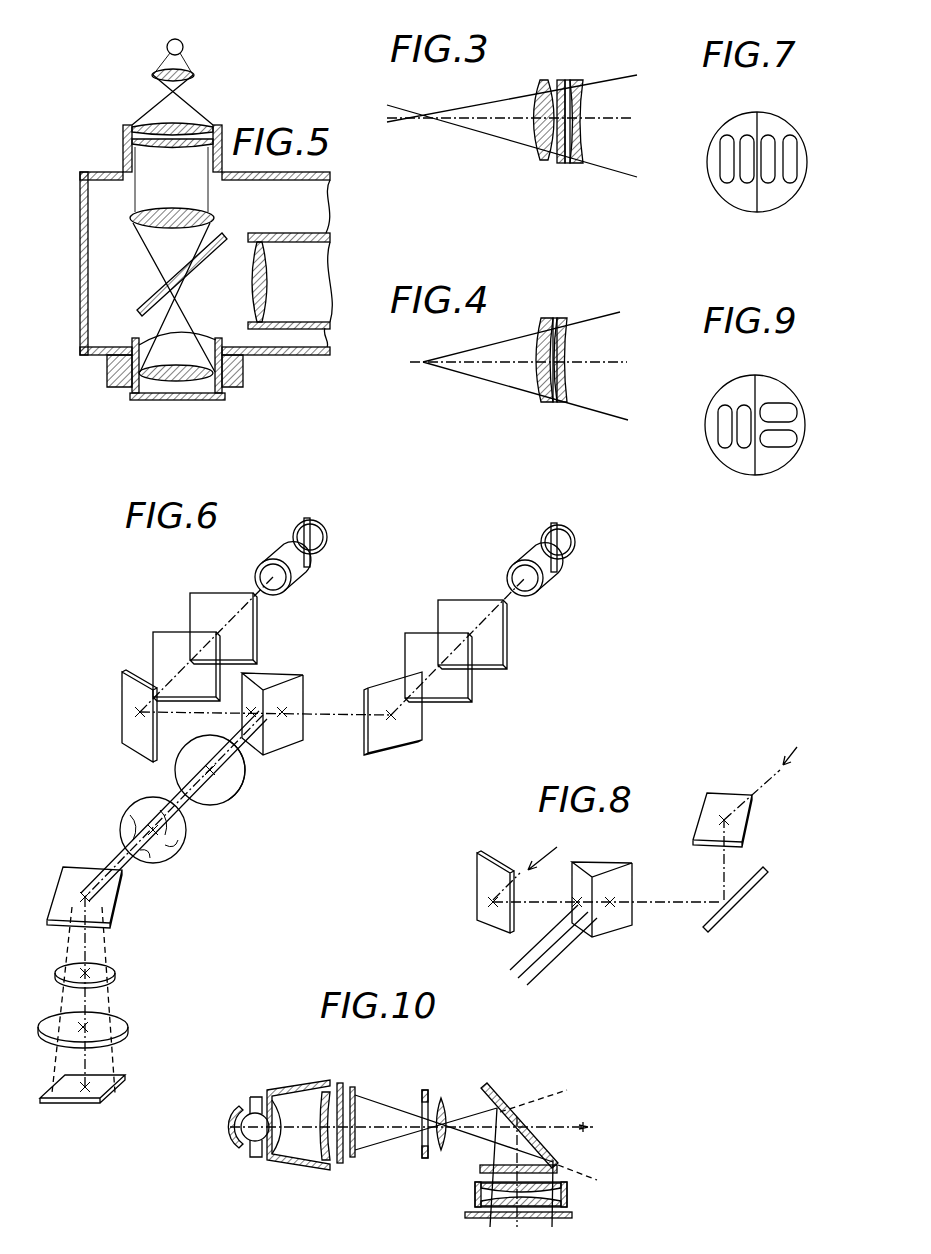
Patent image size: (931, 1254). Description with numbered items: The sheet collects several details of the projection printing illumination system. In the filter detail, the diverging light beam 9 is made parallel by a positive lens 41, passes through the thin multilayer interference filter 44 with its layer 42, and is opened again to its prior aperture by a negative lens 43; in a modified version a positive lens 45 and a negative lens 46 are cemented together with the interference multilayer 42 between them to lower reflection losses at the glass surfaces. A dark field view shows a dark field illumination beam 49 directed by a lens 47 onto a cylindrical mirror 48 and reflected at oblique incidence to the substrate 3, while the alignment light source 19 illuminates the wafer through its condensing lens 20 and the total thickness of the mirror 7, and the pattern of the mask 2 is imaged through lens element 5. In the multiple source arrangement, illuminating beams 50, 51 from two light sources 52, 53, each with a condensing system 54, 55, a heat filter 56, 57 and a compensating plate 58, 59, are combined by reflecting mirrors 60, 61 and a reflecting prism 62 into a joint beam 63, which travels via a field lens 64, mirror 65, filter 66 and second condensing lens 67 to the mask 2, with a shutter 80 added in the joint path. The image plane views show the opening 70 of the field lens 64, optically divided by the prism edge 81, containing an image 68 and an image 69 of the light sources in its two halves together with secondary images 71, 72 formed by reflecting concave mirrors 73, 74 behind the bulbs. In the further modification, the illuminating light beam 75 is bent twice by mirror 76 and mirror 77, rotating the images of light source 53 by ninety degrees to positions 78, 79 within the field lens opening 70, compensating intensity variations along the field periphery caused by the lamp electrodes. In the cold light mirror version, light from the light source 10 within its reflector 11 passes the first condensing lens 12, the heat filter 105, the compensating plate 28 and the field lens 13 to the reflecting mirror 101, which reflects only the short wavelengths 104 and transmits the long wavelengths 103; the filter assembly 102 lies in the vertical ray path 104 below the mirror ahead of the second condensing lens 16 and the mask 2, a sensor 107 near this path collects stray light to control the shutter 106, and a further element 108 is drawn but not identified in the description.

In FIG. 6, the mask 2 is at (50, 1093).
In FIG. 10, the mask 2 is at (465, 1216).
In FIG. 5, the substrate 3 is at (130, 397).
In FIG. 5, the lens element 5 is at (285, 329).
In FIG. 5, the mirror 7 is at (137, 306).
In FIG. 3, the light beam 9 is at (627, 173).
In FIG. 4, the light beam 9 is at (604, 410).
In FIG. 10, the light beam 9 is at (383, 1151).
In FIG. 10, the light source 10 is at (255, 1097).
In FIG. 10, the reflector 11 is at (233, 1102).
In FIG. 10, the first condensing lens 12 is at (300, 1085).
In FIG. 10, the field lens 13 is at (441, 1098).
In FIG. 10, the second condensing lens 16 is at (568, 1205).
In FIG. 5, the light source 19 is at (183, 46).
In FIG. 5, the condensing lens 20 is at (152, 78).
In FIG. 10, the compensating plate 28 is at (357, 1090).
In FIG. 3, the positive lens 41 is at (540, 161).
In FIG. 3, the interference multilayer 42 is at (568, 81).
In FIG. 4, the interference multilayer 42 is at (555, 318).
In FIG. 3, the negative lens 43 is at (577, 165).
In FIG. 3, the thin multilayer interference filter 44 is at (560, 81).
In FIG. 4, the positive lens 45 is at (541, 404).
In FIG. 4, the negative lens 46 is at (561, 404).
In FIG. 5, the lens 47 is at (132, 217).
In FIG. 5, the cylindrical mirror 48 is at (214, 365).
In FIG. 5, the dark field illumination beam 49 is at (147, 255).
In FIG. 6, the illuminating beam 50 is at (254, 584).
In FIG. 8, the illuminating beam 50 is at (545, 846).
In FIG. 6, the illuminating beam 51 is at (510, 600).
In FIG. 6, the light source 52 is at (304, 520).
In FIG. 6, the light source 53 is at (551, 530).
In FIG. 6, the condensing system 54 is at (280, 552).
In FIG. 6, the condensing system 55 is at (520, 556).
In FIG. 6, the heat filter 56 is at (186, 595).
In FIG. 6, the heat filter 57 is at (504, 663).
In FIG. 6, the compensating plate 58 is at (153, 633).
In FIG. 6, the compensating plate 59 is at (470, 700).
In FIG. 6, the reflecting mirror 60 is at (122, 672).
In FIG. 8, the reflecting mirror 60 is at (487, 931).
In FIG. 6, the reflecting mirror 61 is at (424, 742).
In FIG. 6, the reflecting prism 62 is at (300, 746).
In FIG. 8, the reflecting prism 62 is at (622, 935).
In FIG. 6, the joint beam 63 is at (115, 860).
In FIG. 8, the joint beam 63 is at (548, 958).
In FIG. 6, the field lens 64 is at (248, 797).
In FIG. 6, the mirror 65 is at (68, 866).
In FIG. 6, the filter 66 is at (65, 967).
In FIG. 6, the second condensing lens 67 is at (48, 1018).
In FIG. 7, the image of light source 68 is at (745, 138).
In FIG. 9, the image of light source 68 is at (740, 410).
In FIG. 7, the image of light source 69 is at (770, 139).
In FIG. 7, the opening of field lens 70 is at (775, 207).
In FIG. 9, the opening of field lens 70 is at (793, 458).
In FIG. 7, the secondary image 71 is at (720, 146).
In FIG. 9, the secondary image 71 is at (719, 410).
In FIG. 7, the secondary image 72 is at (791, 142).
In FIG. 6, the reflecting concave mirror 73 is at (330, 513).
In FIG. 6, the reflecting concave mirror 74 is at (572, 532).
In FIG. 8, the illuminating light beam 75 is at (778, 775).
In FIG. 8, the mirror 76 is at (710, 933).
In FIG. 8, the mirror 77 is at (750, 829).
In FIG. 9, the rotated light source image position 78 is at (792, 412).
In FIG. 9, the rotated light source image position 79 is at (795, 437).
In FIG. 6, the shutter 80 is at (133, 811).
In FIG. 7, the prism edge 81 is at (751, 117).
In FIG. 6, the prism edge 81 is at (262, 752).
In FIG. 10, the reflecting mirror 101 is at (487, 1083).
In FIG. 10, the filter assembly 102 is at (562, 1170).
In FIG. 10, the long wavelengths 103 is at (563, 1092).
In FIG. 10, the short wavelengths 104 is at (482, 1164).
In FIG. 10, the heat filter 105 is at (340, 1083).
In FIG. 10, the shutter 106 is at (425, 1090).
In FIG. 10, the sensor 107 is at (470, 1182).
In FIG. 10, the direction arrow 108 is at (603, 1117).